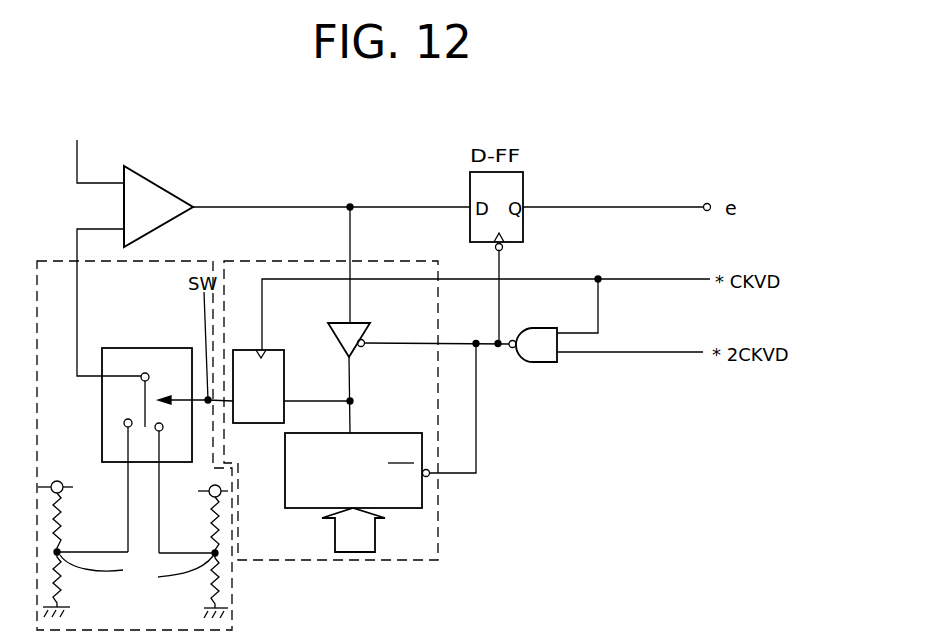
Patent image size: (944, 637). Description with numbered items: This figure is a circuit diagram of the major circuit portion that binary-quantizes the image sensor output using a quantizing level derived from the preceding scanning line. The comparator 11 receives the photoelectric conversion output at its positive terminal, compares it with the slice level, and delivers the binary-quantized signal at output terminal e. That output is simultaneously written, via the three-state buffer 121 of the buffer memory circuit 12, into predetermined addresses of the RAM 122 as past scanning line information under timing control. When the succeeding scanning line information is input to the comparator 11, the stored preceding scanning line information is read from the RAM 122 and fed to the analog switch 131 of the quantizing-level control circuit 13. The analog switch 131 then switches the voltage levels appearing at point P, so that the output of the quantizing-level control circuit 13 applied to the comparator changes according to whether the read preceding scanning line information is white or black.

The comparator 11 is at (170, 201).
The buffer memory circuit 12 is at (422, 530).
The quantizing-level control circuit 13 is at (222, 583).
The three-state buffer 121 is at (364, 324).
The RAM 122 is at (372, 437).
The analog switch 131 is at (118, 418).